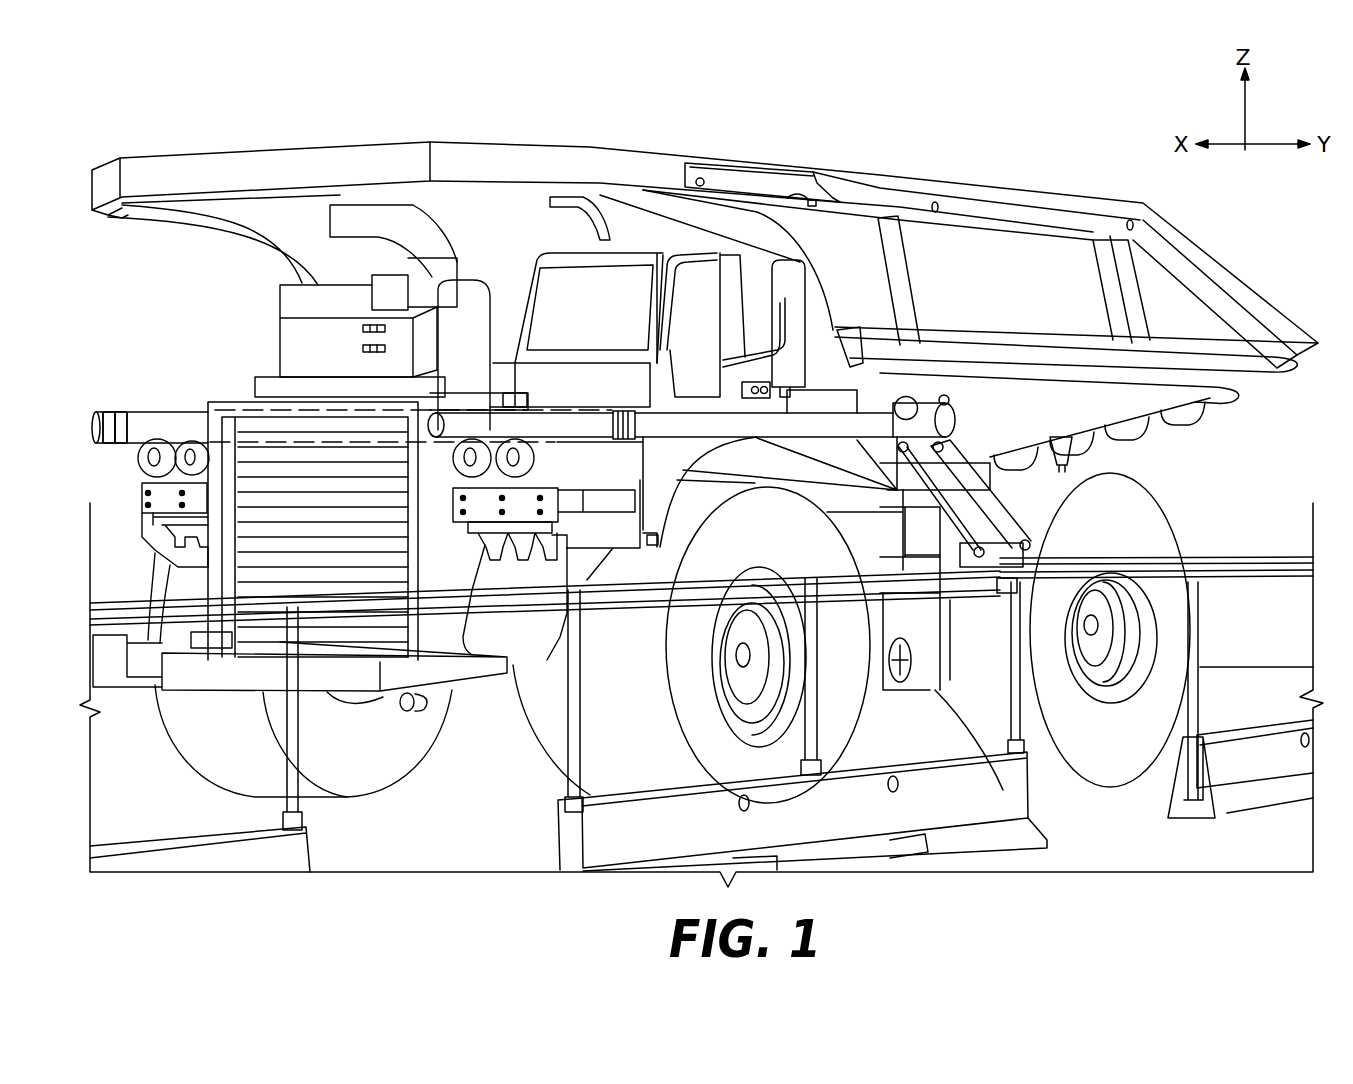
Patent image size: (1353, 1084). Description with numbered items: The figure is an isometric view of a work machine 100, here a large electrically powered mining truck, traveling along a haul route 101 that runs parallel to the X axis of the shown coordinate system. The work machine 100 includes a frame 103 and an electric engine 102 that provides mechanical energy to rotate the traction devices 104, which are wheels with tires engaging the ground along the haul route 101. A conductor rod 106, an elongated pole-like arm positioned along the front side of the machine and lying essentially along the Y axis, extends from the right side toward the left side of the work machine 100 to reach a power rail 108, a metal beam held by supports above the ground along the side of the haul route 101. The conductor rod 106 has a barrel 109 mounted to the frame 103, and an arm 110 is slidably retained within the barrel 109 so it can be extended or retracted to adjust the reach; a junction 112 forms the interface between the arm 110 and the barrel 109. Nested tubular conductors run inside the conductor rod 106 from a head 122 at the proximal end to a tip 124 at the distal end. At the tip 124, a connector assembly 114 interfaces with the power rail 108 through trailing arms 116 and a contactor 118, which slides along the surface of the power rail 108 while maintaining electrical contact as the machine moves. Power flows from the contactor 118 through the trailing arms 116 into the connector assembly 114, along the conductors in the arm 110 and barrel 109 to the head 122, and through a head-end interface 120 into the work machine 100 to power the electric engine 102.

The work machine 100 is at (795, 116).
The haul route 101 is at (434, 830).
The electric engine 102 is at (338, 540).
The frame 103 is at (748, 466).
The traction devices 104 is at (1137, 483).
The conductor rod 106 is at (148, 374).
The power rail 108 is at (916, 598).
The barrel 109 is at (485, 427).
The arm 110 is at (729, 432).
The junction 112 is at (627, 413).
The connector assembly 114 is at (958, 393).
The trailing arms 116 is at (997, 527).
The contactor 118 is at (1017, 553).
The head-end interface 120 is at (105, 415).
The head 122 is at (124, 437).
The tip 124 is at (885, 417).